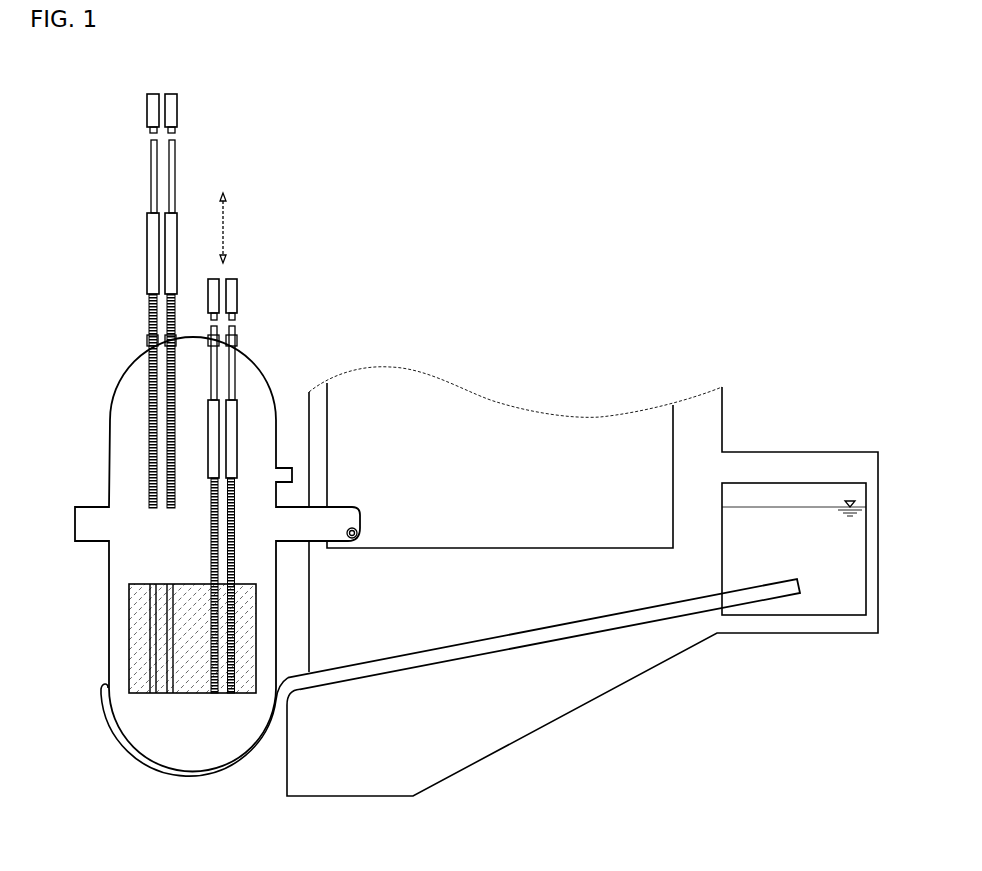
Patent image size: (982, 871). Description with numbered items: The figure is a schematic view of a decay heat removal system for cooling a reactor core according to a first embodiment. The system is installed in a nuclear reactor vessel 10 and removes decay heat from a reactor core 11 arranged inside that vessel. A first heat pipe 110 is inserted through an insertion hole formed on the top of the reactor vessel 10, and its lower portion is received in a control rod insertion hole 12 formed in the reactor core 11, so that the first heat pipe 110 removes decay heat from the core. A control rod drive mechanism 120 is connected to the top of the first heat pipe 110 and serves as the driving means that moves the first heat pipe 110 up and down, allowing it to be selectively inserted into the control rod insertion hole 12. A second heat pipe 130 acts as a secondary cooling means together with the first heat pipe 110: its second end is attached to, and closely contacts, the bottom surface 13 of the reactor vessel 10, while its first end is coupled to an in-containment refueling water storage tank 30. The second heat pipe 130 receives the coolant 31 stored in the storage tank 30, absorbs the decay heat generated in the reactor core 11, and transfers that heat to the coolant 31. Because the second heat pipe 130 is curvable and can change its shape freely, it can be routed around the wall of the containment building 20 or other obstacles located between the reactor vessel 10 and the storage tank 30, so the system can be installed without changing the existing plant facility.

The nuclear reactor vessel 10 is at (105, 375).
The reactor core 11 is at (140, 634).
The control rod insertion hole 12 is at (155, 621).
The bottom surface of the reactor vessel 13 is at (158, 733).
The containment building 20 is at (493, 757).
The in-containment refueling water storage tank 30 is at (833, 617).
The coolant 31 is at (793, 527).
The first heat pipe 110 is at (143, 303).
The control rod drive mechanism 120 is at (178, 112).
The second heat pipe 130 is at (555, 633).